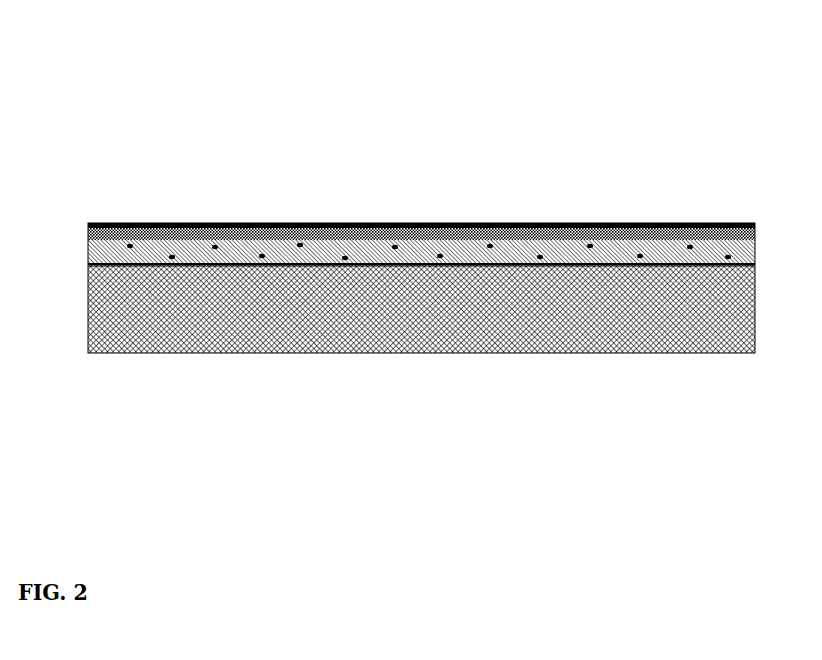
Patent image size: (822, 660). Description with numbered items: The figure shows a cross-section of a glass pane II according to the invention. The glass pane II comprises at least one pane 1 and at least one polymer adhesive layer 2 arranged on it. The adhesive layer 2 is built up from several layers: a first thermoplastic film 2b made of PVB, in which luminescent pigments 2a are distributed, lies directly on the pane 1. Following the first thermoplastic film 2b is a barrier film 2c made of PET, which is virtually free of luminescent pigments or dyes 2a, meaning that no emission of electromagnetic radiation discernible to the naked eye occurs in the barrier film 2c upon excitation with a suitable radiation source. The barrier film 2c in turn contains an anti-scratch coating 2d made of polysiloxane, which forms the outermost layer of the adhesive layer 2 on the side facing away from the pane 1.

The pane 1 is at (229, 377).
The polymer adhesive layer 2 is at (758, 223).
The luminescent pigments 2a is at (81, 248).
The first thermoplastic film 2b is at (81, 266).
The barrier film 2c is at (82, 227).
The anti-scratch coating 2d is at (85, 215).
The glass pane II is at (395, 102).